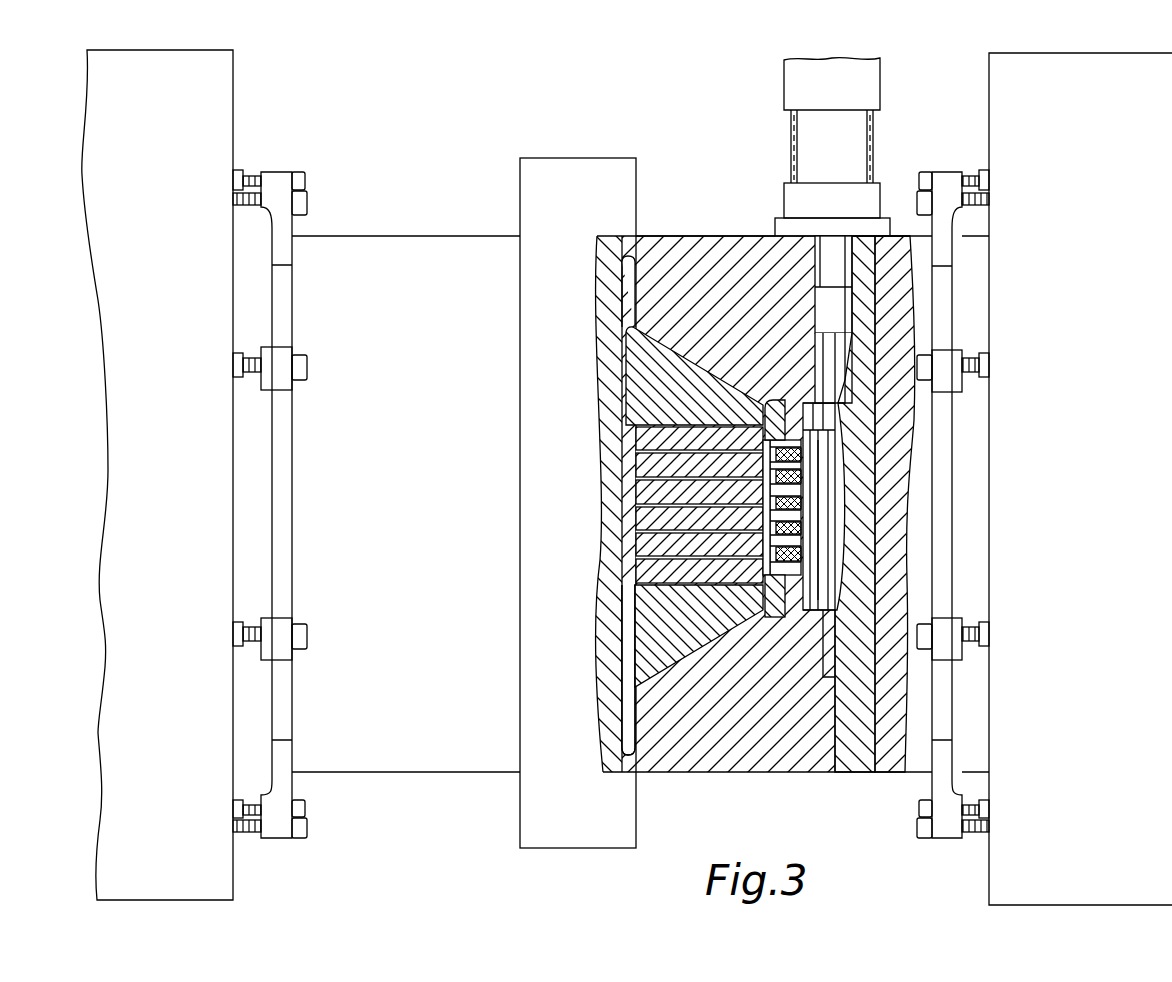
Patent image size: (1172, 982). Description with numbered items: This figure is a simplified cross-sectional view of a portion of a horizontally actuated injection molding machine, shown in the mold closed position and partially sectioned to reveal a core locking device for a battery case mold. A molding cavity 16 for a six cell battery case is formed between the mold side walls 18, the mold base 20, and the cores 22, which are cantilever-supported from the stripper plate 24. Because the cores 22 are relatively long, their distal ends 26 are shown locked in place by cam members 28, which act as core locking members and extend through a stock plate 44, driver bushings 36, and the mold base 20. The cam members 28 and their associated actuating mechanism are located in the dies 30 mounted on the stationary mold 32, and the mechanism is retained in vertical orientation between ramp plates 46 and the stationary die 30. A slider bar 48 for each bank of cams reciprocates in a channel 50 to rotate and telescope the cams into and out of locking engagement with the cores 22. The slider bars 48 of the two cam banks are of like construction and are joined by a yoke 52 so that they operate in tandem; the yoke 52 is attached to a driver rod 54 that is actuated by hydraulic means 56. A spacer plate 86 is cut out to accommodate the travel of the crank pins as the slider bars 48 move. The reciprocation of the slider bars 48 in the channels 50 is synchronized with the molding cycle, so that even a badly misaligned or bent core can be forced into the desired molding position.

The molding cavity 16 is at (648, 600).
The mold side walls 18 is at (640, 370).
The mold base 20 is at (765, 612).
The cores 22 is at (688, 540).
The stripper plate 24 is at (650, 268).
The distal ends 26 is at (765, 400).
The cam members 28 is at (762, 497).
The dies 30 is at (745, 266).
The stationary mold 32 is at (892, 754).
The driver bushings 36 is at (803, 432).
The stock plate 44 is at (808, 414).
The ramp plates 46 is at (863, 745).
The slider bar 48 is at (818, 360).
The channel 50 is at (840, 360).
The yoke 52 is at (828, 302).
The driver rod 54 is at (828, 254).
The hydraulic means 56 is at (797, 86).
The spacer plate 86 is at (820, 493).